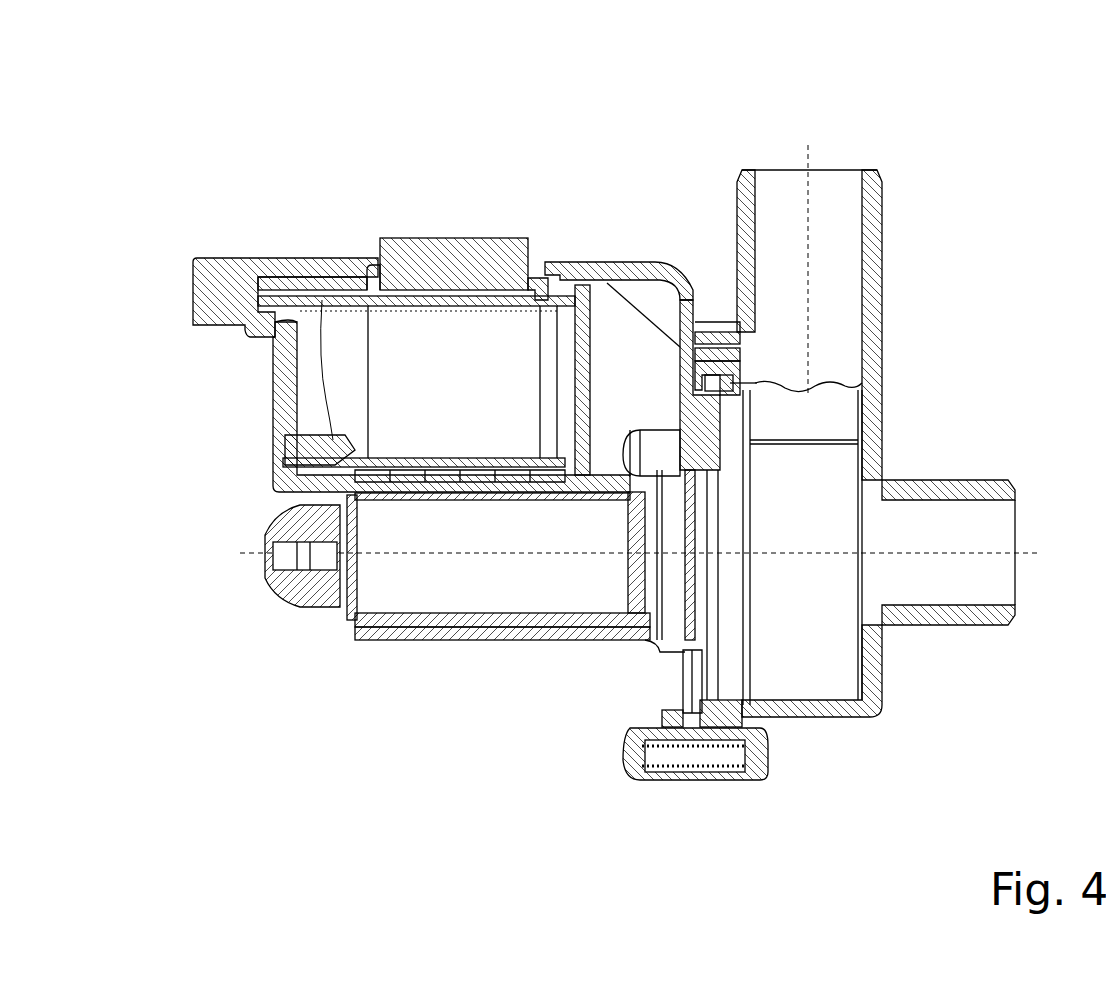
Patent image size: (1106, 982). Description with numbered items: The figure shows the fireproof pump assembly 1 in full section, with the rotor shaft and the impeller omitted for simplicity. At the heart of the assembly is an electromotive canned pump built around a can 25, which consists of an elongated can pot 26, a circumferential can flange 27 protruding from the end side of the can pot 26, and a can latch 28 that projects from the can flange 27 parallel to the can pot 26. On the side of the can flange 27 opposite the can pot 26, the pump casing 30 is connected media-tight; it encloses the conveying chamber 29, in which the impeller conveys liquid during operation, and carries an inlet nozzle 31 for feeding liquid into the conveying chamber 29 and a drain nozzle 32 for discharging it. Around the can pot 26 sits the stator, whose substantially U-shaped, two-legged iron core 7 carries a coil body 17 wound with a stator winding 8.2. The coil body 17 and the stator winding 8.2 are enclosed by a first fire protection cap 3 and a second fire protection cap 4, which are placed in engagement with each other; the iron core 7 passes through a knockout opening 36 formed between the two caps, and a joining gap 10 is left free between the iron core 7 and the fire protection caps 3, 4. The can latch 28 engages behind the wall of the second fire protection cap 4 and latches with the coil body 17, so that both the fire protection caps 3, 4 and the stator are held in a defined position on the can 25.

The fireproof pump assembly 1 is at (122, 110).
The fire protection cap 3 is at (280, 393).
The second fire protection cap 4 is at (590, 354).
The iron core 7 is at (452, 268).
The stator winding 8.2 is at (462, 382).
The joining gap 10 is at (537, 482).
The coil body 17 is at (328, 292).
The can 25 is at (612, 663).
The can pot 26 is at (352, 618).
The can flange 27 is at (702, 672).
The can latch 28 is at (628, 282).
The conveying chamber 29 is at (784, 547).
The pump casing 30 is at (900, 712).
The inlet nozzle 31 is at (975, 487).
The drain nozzle 32 is at (873, 212).
The knockout opening 36 is at (535, 290).